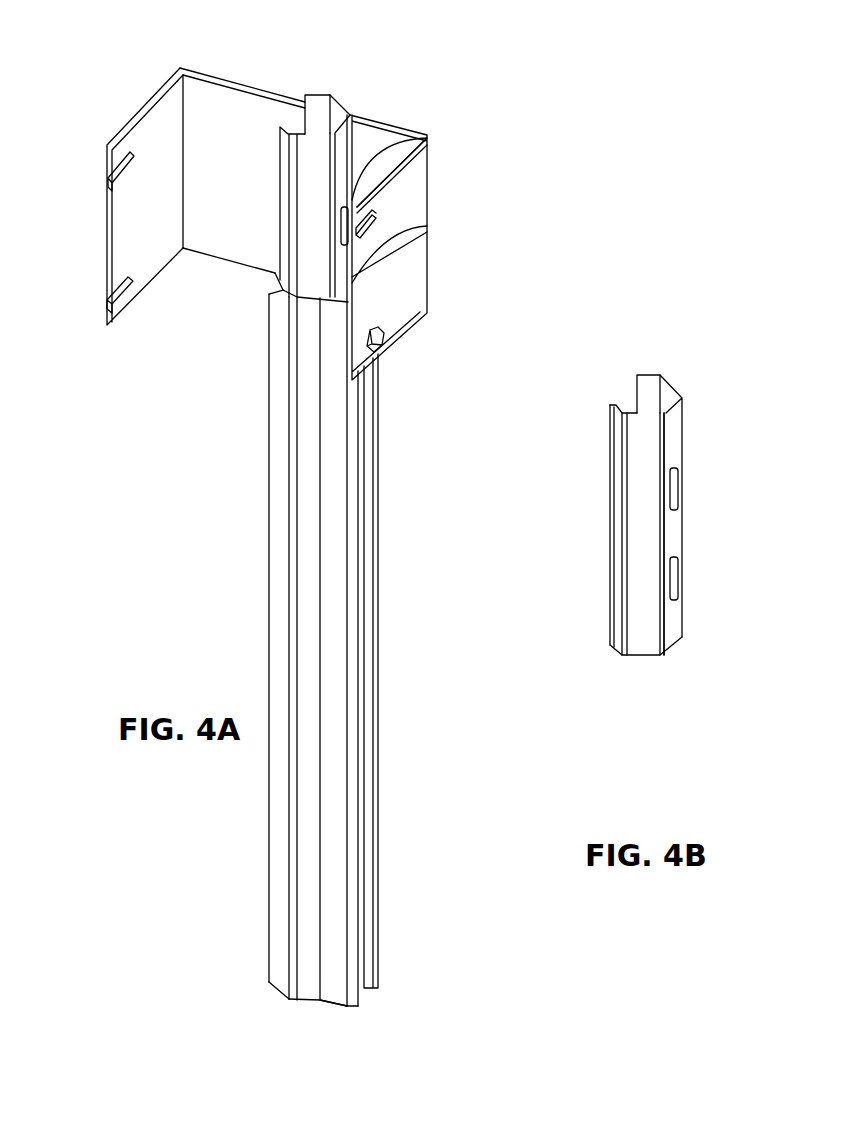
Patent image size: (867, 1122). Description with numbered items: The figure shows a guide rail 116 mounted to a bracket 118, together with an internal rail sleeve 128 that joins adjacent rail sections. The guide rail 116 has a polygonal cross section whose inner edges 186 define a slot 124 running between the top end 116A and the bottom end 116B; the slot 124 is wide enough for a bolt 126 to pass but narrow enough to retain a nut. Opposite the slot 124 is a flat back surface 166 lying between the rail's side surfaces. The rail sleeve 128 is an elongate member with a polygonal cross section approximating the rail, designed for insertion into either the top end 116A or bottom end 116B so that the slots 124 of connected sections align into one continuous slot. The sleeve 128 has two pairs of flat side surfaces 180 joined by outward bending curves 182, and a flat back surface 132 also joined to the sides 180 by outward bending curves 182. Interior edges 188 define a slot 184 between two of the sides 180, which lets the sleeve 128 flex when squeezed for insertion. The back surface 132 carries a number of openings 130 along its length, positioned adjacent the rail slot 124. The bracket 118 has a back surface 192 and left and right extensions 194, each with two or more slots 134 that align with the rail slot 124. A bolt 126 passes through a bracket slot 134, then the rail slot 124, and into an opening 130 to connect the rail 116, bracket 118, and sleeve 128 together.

In FIG. 4A, the guide rail 116 is at (332, 715).
In FIG. 4A, the top end 116A is at (278, 288).
In FIG. 4A, the bottom end 116B is at (268, 982).
In FIG. 4A, the bracket 118 is at (440, 164).
In FIG. 4A, the slot 124 is at (362, 745).
In FIG. 4A, the bolt 126 is at (382, 335).
In FIG. 4A, the rail sleeve 128 is at (302, 133).
In FIG. 4B, the rail sleeve 128 is at (708, 365).
In FIG. 4A, the opening 130 is at (356, 205).
In FIG. 4B, the opening 130 is at (680, 490).
In FIG. 4A, the back surface 132 is at (442, 262).
In FIG. 4B, the back surface 132 is at (673, 540).
In FIG. 4A, the slot 134 is at (112, 172).
In FIG. 4A, the back surface 166 is at (272, 273).
In FIG. 4A, the side surface 180 is at (328, 96).
In FIG. 4B, the side surface 180 is at (656, 375).
In FIG. 4A, the outward bending curve 182 is at (342, 104).
In FIG. 4B, the outward bending curve 182 is at (672, 655).
In FIG. 4B, the slot 184 is at (626, 395).
In FIG. 4A, the inner edge 186 is at (350, 1004).
In FIG. 4A, the interior edge 188 is at (320, 95).
In FIG. 4B, the interior edge 188 is at (640, 375).
In FIG. 4A, the back surface 192 is at (200, 252).
In FIG. 4A, the extension 194 is at (130, 212).